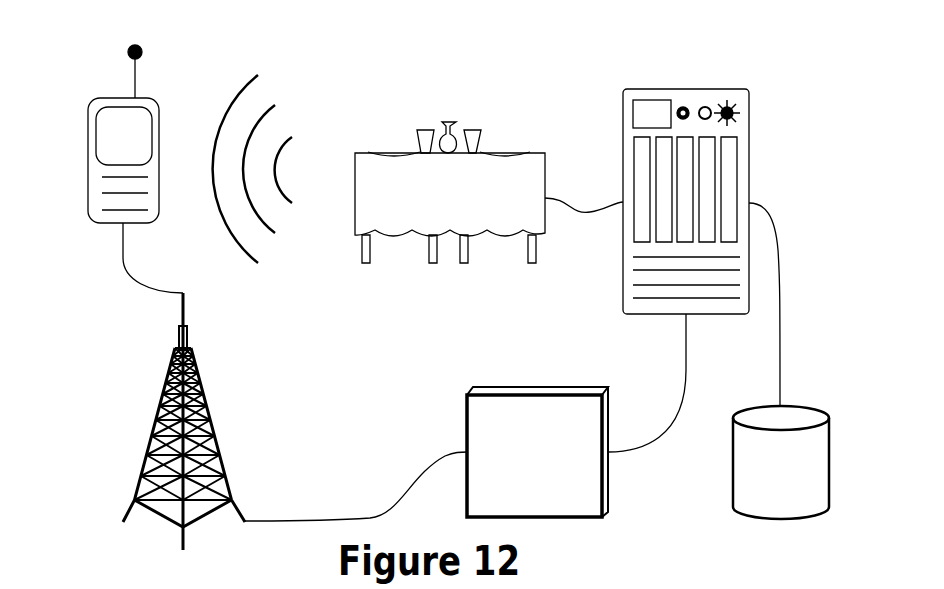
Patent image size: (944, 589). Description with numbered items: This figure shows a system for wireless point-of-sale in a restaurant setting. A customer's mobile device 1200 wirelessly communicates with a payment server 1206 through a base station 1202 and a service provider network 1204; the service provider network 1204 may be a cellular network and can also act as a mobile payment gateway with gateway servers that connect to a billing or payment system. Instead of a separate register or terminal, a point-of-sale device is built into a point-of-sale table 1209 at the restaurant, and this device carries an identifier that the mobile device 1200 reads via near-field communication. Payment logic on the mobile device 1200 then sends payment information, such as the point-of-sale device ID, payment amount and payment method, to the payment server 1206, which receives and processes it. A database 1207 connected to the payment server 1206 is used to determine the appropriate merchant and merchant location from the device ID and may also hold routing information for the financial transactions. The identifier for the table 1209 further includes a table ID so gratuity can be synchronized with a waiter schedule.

The mobile device 1200 is at (142, 98).
The base station 1202 is at (207, 413).
The service provider network 1204 is at (542, 395).
The payment server 1206 is at (686, 89).
The database 1207 is at (782, 515).
The point-of-sale table 1209 is at (417, 233).